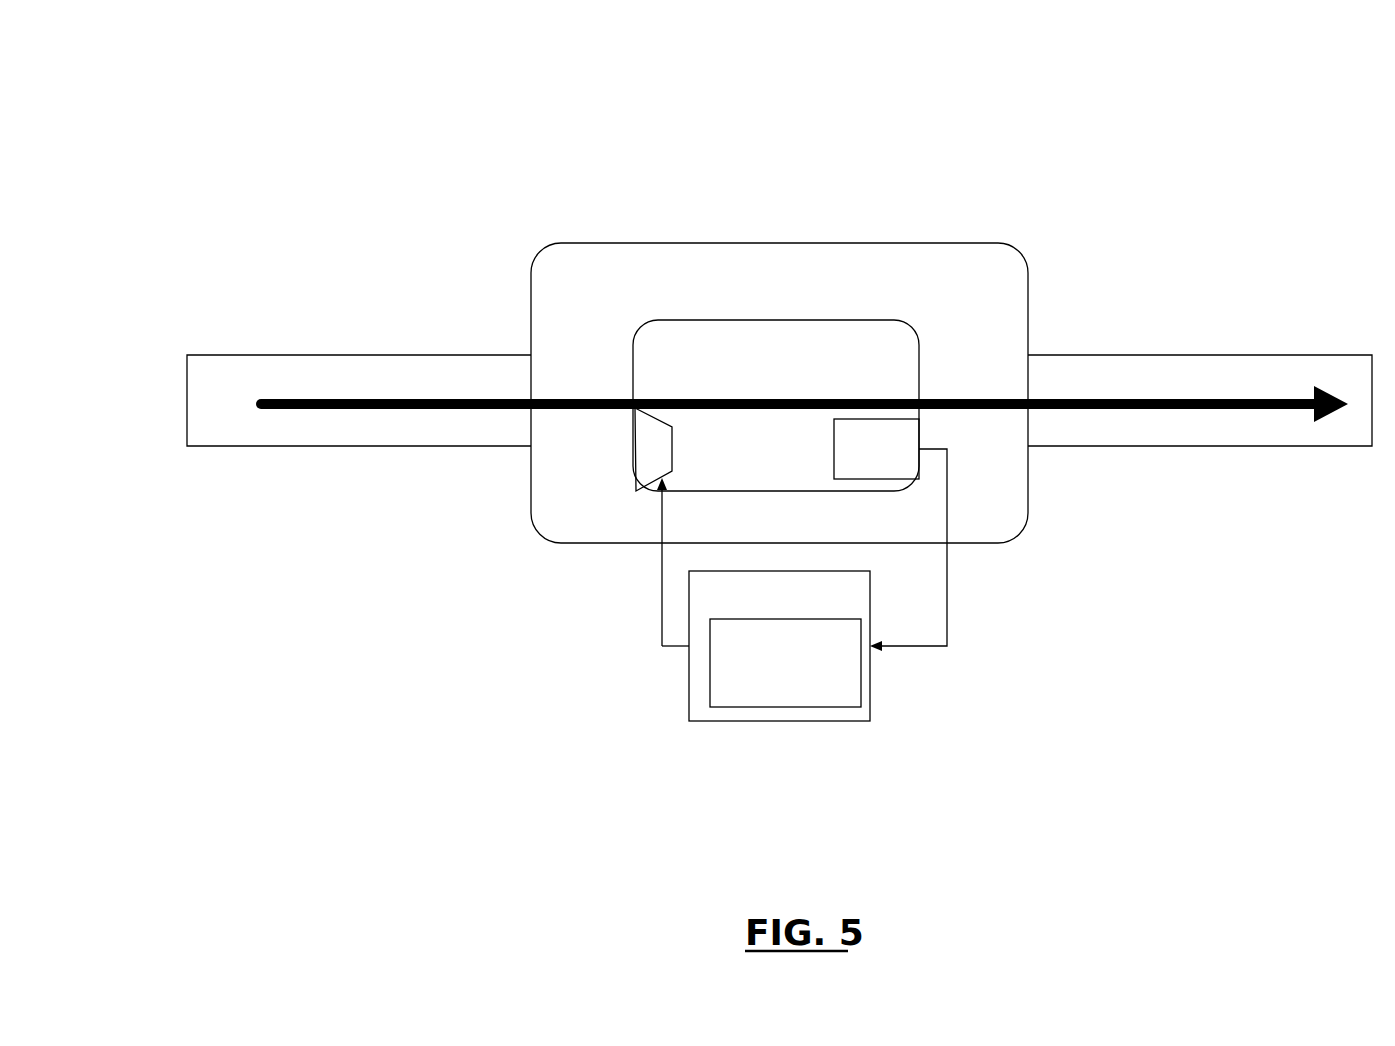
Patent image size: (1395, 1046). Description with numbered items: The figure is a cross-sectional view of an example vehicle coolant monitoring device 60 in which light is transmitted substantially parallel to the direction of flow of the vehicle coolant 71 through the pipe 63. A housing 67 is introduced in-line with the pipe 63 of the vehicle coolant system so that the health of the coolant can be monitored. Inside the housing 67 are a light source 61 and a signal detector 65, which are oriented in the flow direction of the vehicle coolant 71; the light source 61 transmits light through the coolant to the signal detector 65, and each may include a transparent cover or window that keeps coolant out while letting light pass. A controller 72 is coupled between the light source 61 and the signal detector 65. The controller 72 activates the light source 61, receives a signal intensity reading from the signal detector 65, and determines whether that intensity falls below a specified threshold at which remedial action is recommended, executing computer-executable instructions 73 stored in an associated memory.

The vehicle coolant monitoring device 60 is at (172, 76).
The light source 61 is at (633, 473).
The pipe 63 is at (297, 355).
The signal detector 65 is at (909, 480).
The housing 67 is at (605, 243).
The vehicle coolant 71 is at (281, 412).
The controller 72 is at (689, 693).
The computer-executable instructions 73 is at (861, 687).